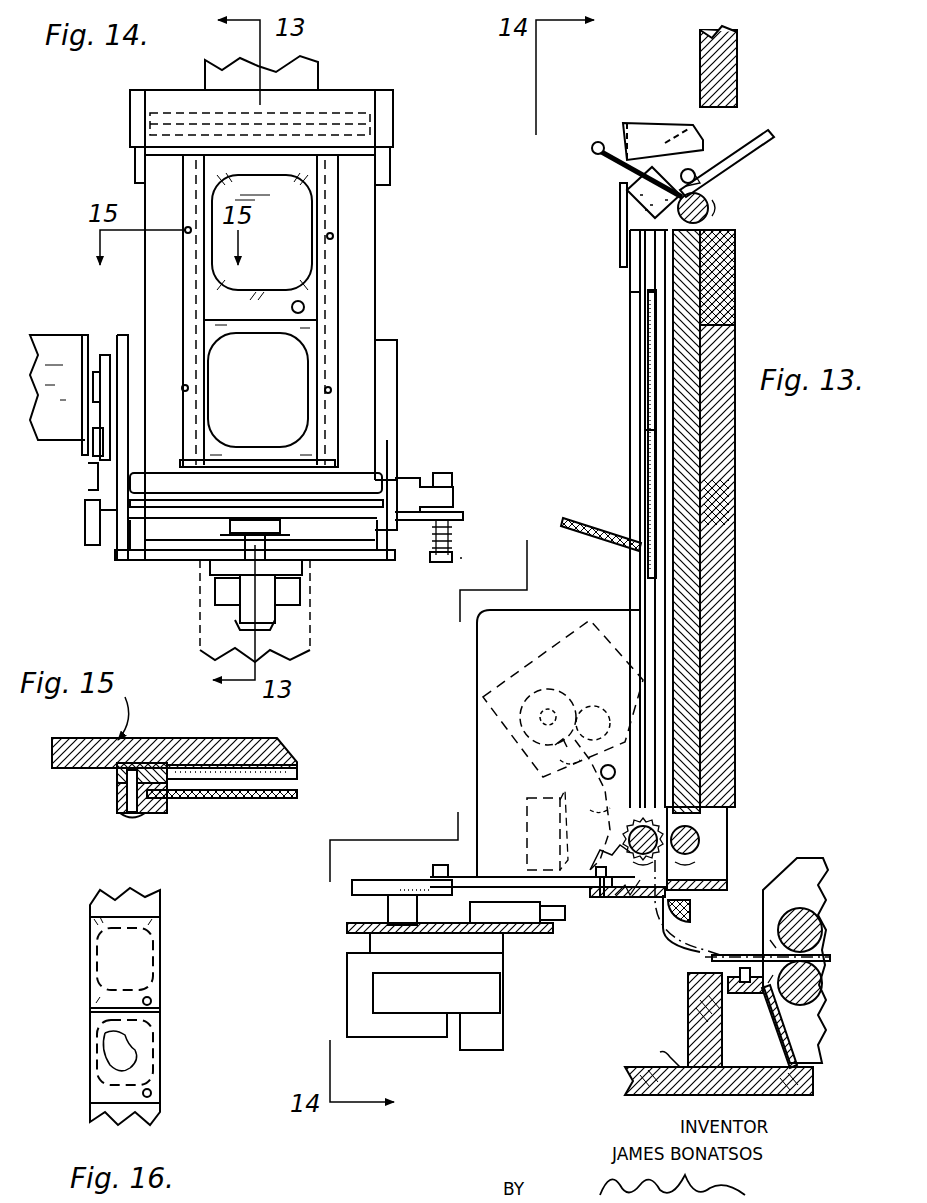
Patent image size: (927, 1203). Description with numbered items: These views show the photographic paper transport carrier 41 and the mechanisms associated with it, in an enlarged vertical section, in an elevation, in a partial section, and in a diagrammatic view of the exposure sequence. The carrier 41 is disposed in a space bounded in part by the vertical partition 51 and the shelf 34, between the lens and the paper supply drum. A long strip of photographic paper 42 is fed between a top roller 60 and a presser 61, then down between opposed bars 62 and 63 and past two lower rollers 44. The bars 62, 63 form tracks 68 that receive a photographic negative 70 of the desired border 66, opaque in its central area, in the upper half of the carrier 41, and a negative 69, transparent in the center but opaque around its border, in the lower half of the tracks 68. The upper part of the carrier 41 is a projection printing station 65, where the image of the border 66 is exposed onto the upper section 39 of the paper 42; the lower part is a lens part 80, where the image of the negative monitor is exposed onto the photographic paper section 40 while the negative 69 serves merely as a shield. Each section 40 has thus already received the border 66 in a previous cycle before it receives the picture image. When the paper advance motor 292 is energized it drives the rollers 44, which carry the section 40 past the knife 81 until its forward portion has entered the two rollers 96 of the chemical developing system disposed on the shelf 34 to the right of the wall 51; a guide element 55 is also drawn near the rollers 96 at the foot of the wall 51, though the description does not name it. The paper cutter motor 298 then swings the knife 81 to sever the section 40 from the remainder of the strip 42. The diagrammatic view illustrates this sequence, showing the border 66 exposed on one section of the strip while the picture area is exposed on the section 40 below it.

In FIG. 13, the shelf 34 is at (690, 1040).
In FIG. 16, the upper section of the paper 39 is at (153, 983).
In FIG. 13, the upper section of the paper 39 is at (725, 300).
In FIG. 14, the photographic paper section 40 is at (200, 567).
In FIG. 16, the photographic paper section 40 is at (153, 1070).
In FIG. 13, the photographic paper section 40 is at (660, 590).
In FIG. 15, the paper transport carrier 41 is at (322, 739).
In FIG. 13, the paper transport carrier 41 is at (700, 455).
In FIG. 14, the strip of photographic paper 42 is at (305, 72).
In FIG. 15, the strip of photographic paper 42 is at (297, 776).
In FIG. 13, the strip of photographic paper 42 is at (760, 138).
In FIG. 13, the rollers 44 is at (700, 835).
In FIG. 13, the vertical partition 51 is at (720, 515).
In FIG. 13, the guide 55 is at (773, 1053).
In FIG. 14, the top roller 60 is at (370, 105).
In FIG. 13, the top roller 60 is at (710, 215).
In FIG. 13, the presser 61 is at (628, 212).
In FIG. 14, the bar 62 is at (188, 283).
In FIG. 15, the bar 62 is at (118, 773).
In FIG. 14, the bar 63 is at (328, 325).
In FIG. 14, the projection printing station 65 is at (332, 203).
In FIG. 16, the border 66 is at (90, 950).
In FIG. 15, the tracks 68 is at (168, 800).
In FIG. 14, the negative 69 is at (295, 418).
In FIG. 13, the negative 69 is at (645, 590).
In FIG. 14, the photographic negative 70 is at (300, 283).
In FIG. 15, the photographic negative 70 is at (250, 798).
In FIG. 13, the photographic negative 70 is at (648, 425).
In FIG. 14, the lower lens part 80 is at (345, 300).
In FIG. 14, the knife 81 is at (463, 517).
In FIG. 13, the knife 81 is at (595, 900).
In FIG. 13, the rollers 96 is at (800, 910).
In FIG. 14, the paper advance motor 292 is at (40, 335).
In FIG. 13, the paper advance motor 292 is at (570, 730).
In FIG. 14, the paper cutter motor 298 is at (215, 600).
In FIG. 13, the paper cutter motor 298 is at (355, 1005).